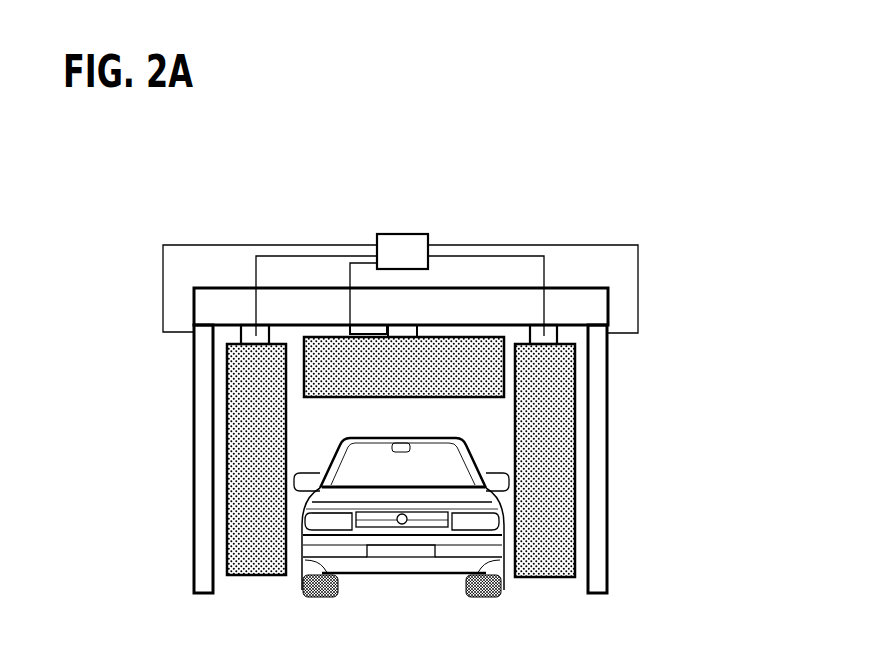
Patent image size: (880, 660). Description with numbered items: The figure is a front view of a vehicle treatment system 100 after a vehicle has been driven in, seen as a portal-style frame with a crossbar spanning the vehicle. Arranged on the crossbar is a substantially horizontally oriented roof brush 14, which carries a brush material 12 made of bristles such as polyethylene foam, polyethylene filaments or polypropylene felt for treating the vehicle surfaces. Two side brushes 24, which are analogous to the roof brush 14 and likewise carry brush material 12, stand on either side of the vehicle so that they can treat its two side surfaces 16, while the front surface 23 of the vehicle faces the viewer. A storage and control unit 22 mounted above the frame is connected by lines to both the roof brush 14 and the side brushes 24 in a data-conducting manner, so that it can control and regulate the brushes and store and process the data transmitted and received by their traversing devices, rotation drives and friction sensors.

The vehicle treatment system 100 is at (158, 206).
The brush material 12 is at (247, 371).
The roof brush 14 is at (465, 370).
The side surfaces 16 is at (484, 458).
The storage and control unit 22 is at (377, 235).
The front surface 23 is at (333, 523).
The side brushes 24 is at (225, 547).